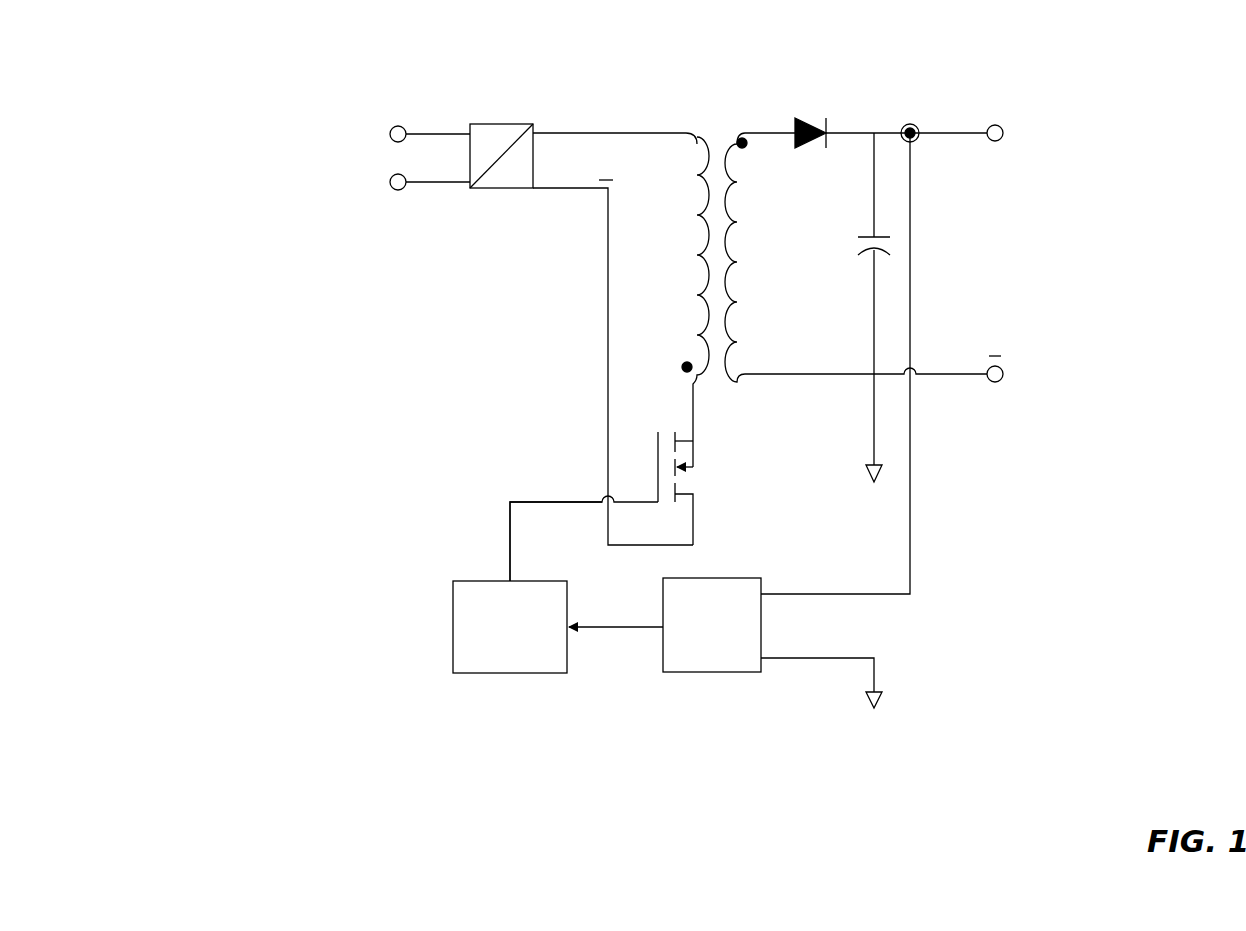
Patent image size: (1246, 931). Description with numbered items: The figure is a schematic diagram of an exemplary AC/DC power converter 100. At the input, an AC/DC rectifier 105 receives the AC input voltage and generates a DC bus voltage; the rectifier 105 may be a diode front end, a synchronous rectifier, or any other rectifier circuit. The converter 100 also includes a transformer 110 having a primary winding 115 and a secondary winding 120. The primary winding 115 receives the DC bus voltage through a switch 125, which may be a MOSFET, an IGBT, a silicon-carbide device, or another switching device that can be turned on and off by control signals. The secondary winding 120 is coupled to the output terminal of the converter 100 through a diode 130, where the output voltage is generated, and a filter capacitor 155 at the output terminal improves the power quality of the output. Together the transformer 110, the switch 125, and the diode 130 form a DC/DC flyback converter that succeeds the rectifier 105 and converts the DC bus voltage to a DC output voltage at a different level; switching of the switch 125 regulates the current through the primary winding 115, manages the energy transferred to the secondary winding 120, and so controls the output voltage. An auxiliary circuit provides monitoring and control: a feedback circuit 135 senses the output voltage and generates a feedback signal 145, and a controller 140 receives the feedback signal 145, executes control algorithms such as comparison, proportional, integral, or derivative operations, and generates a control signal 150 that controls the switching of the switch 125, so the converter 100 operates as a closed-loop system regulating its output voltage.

The AC/DC power converter 100 is at (328, 86).
The AC/DC rectifier 105 is at (499, 120).
The transformer 110 is at (713, 121).
The primary winding 115 is at (696, 206).
The secondary winding 120 is at (738, 206).
The switch 125 is at (675, 428).
The diode 130 is at (814, 122).
The feedback circuit 135 is at (716, 575).
The controller 140 is at (478, 576).
The feedback signal 145 is at (598, 620).
The control signal 150 is at (556, 497).
The filter capacitor 155 is at (861, 231).